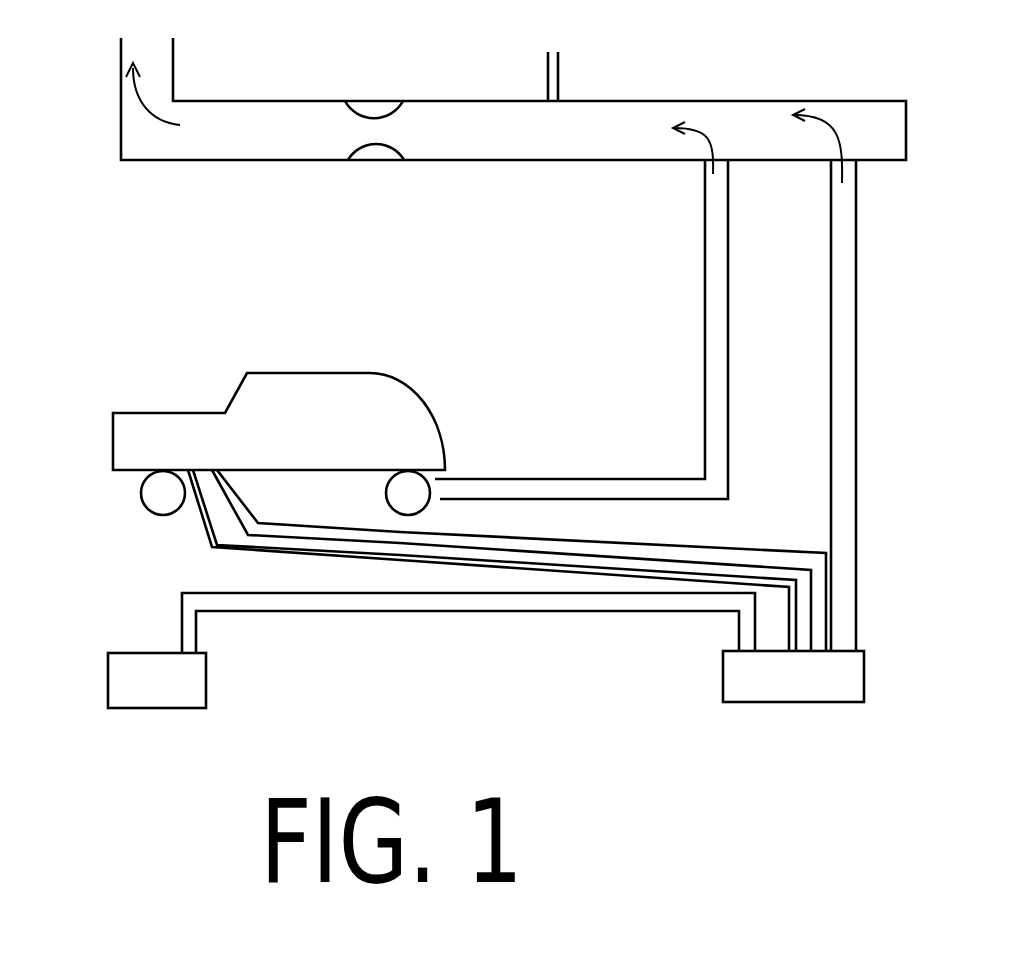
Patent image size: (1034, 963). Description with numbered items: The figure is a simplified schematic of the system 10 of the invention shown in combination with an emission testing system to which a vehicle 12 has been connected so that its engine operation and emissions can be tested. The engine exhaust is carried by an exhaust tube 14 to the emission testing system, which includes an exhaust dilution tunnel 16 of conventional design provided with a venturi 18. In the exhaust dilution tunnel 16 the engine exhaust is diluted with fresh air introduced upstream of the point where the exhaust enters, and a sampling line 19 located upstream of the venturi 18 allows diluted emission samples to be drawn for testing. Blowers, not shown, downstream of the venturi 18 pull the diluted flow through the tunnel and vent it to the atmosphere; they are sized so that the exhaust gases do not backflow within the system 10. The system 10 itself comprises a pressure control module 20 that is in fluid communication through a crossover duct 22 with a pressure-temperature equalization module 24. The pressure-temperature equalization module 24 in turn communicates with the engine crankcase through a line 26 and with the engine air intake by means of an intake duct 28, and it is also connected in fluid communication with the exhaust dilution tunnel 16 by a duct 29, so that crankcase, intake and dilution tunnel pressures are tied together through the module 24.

The system 10 is at (747, 66).
The vehicle 12 is at (311, 443).
The exhaust tube 14 is at (703, 338).
The exhaust dilution tunnel 16 is at (586, 147).
The venturi 18 is at (398, 147).
The sampling line 19 is at (558, 78).
The pressure control module 20 is at (188, 702).
The crossover duct 22 is at (418, 613).
The pressure-temperature equalization module 24 is at (818, 693).
The line 26 is at (243, 555).
The intake duct 28 is at (712, 548).
The duct 29 is at (856, 327).